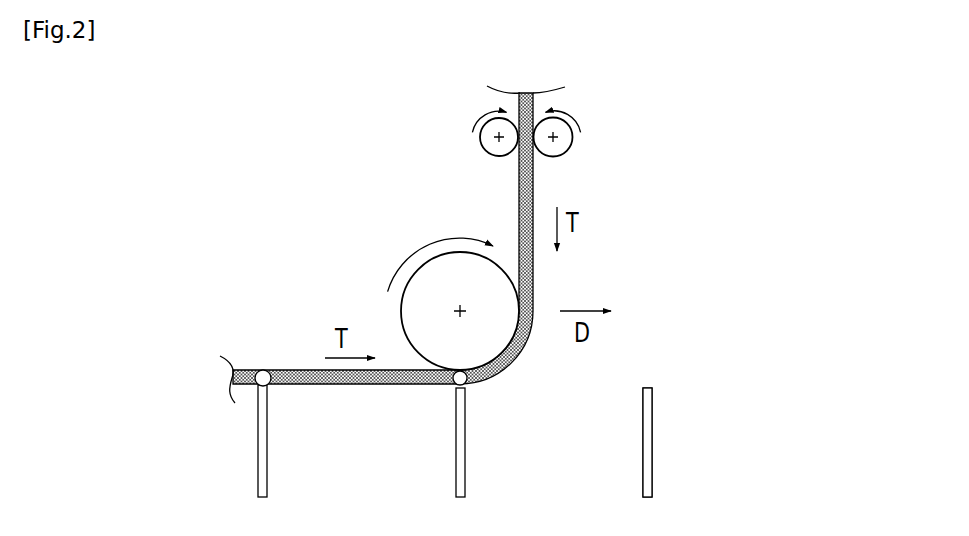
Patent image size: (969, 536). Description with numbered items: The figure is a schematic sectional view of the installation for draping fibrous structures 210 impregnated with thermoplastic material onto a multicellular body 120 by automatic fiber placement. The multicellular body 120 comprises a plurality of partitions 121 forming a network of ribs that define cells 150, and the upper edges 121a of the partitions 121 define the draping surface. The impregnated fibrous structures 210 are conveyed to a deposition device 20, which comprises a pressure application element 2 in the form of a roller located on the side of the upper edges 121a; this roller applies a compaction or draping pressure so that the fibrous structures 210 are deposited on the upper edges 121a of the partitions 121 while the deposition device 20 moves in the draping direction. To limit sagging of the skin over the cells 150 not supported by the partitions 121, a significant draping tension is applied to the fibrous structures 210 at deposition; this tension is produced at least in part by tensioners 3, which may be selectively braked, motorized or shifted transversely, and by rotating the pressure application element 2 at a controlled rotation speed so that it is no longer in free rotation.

The pressure application element 2 is at (412, 315).
The tensioners 3 is at (566, 137).
The deposition device 20 is at (672, 167).
The fibrous structures 210 is at (518, 193).
The multicellular body 120 is at (640, 416).
The partitions 121 is at (648, 485).
The upper edges 121a is at (648, 387).
The cells 150 is at (360, 452).